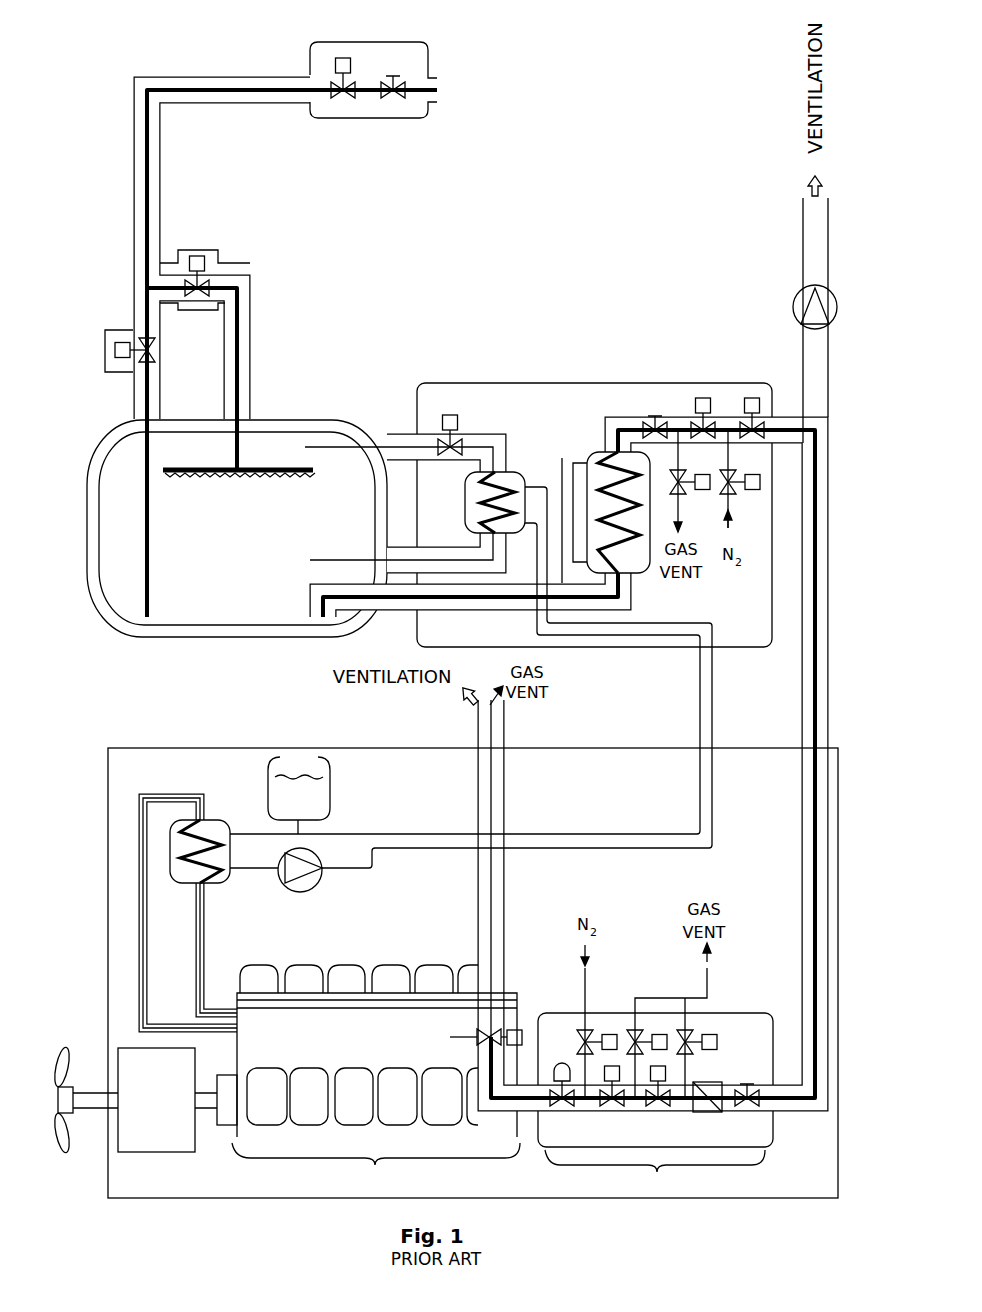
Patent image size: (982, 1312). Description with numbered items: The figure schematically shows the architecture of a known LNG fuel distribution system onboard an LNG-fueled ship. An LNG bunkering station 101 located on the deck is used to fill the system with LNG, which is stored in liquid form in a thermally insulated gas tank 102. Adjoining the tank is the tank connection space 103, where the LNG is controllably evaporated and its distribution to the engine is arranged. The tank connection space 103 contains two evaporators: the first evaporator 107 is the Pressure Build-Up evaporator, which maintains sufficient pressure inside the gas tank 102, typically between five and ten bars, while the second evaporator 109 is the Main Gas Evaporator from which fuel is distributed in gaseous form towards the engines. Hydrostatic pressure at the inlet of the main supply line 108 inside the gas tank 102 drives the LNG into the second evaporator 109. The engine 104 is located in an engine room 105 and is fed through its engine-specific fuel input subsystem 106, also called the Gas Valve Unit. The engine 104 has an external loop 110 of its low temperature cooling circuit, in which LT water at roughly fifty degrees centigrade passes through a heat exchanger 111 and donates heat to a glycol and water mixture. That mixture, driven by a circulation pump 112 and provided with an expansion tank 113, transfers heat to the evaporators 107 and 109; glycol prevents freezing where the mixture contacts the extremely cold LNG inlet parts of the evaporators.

The LNG bunkering station 101 is at (430, 42).
The gas tank 102 is at (283, 443).
The tank connection space 103 is at (442, 393).
The engine 104 is at (287, 1077).
The engine room 105 is at (215, 755).
The engine-specific fuel input subsystem 106 is at (655, 1103).
The first evaporator 107 is at (462, 515).
The main supply line 108 is at (473, 610).
The second evaporator 109 is at (593, 450).
The external loop 110 is at (205, 947).
The heat exchanger 111 is at (205, 815).
The circulation pump 112 is at (316, 888).
The expansion tank 113 is at (330, 790).